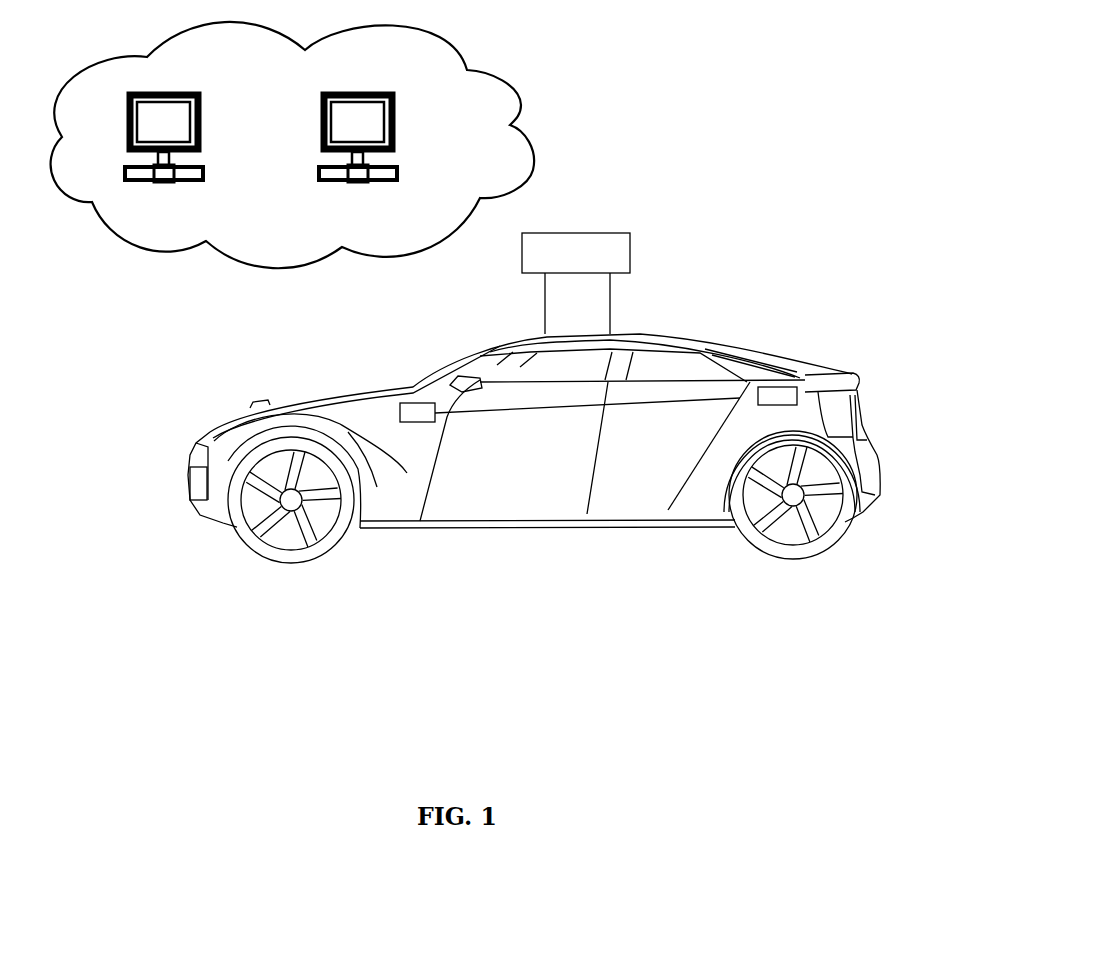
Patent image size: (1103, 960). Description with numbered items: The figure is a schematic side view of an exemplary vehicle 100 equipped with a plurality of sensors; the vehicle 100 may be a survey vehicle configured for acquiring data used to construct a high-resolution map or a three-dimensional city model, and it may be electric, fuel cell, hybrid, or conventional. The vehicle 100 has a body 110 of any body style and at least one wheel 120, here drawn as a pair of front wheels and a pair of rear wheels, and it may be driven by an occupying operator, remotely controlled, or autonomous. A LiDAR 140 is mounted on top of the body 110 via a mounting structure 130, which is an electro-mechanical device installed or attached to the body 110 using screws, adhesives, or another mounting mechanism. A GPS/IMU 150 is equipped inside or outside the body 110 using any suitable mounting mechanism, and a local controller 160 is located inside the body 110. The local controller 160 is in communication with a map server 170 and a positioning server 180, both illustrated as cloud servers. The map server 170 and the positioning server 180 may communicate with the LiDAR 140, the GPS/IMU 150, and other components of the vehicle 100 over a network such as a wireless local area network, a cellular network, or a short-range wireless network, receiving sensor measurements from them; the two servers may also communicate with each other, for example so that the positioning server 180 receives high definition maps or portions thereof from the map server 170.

The vehicle 100 is at (772, 116).
The body 110 is at (456, 315).
The wheel 120 is at (874, 541).
The mounting structure 130 is at (628, 306).
The LiDAR 140 is at (587, 217).
The GPS/IMU 150 is at (402, 394).
The local controller 160 is at (800, 379).
The map server 170 is at (216, 126).
The positioning server 180 is at (410, 126).